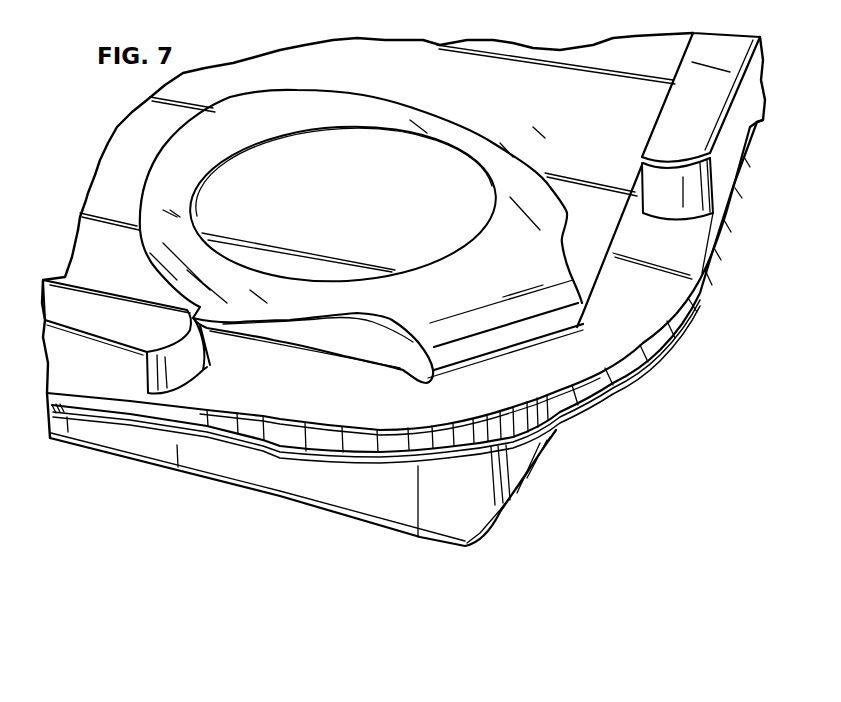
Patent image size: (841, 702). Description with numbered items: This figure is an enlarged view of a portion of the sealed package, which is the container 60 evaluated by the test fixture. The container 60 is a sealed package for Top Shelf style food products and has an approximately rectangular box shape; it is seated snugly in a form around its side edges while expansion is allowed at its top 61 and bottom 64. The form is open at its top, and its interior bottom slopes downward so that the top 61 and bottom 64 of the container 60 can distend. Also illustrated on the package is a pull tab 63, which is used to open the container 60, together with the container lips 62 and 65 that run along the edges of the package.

The container 60 is at (120, 123).
The top 61 is at (567, 47).
The container lip 62 is at (612, 402).
The pull tab 63 is at (427, 127).
The bottom 64 is at (233, 488).
The container lip 65 is at (573, 423).